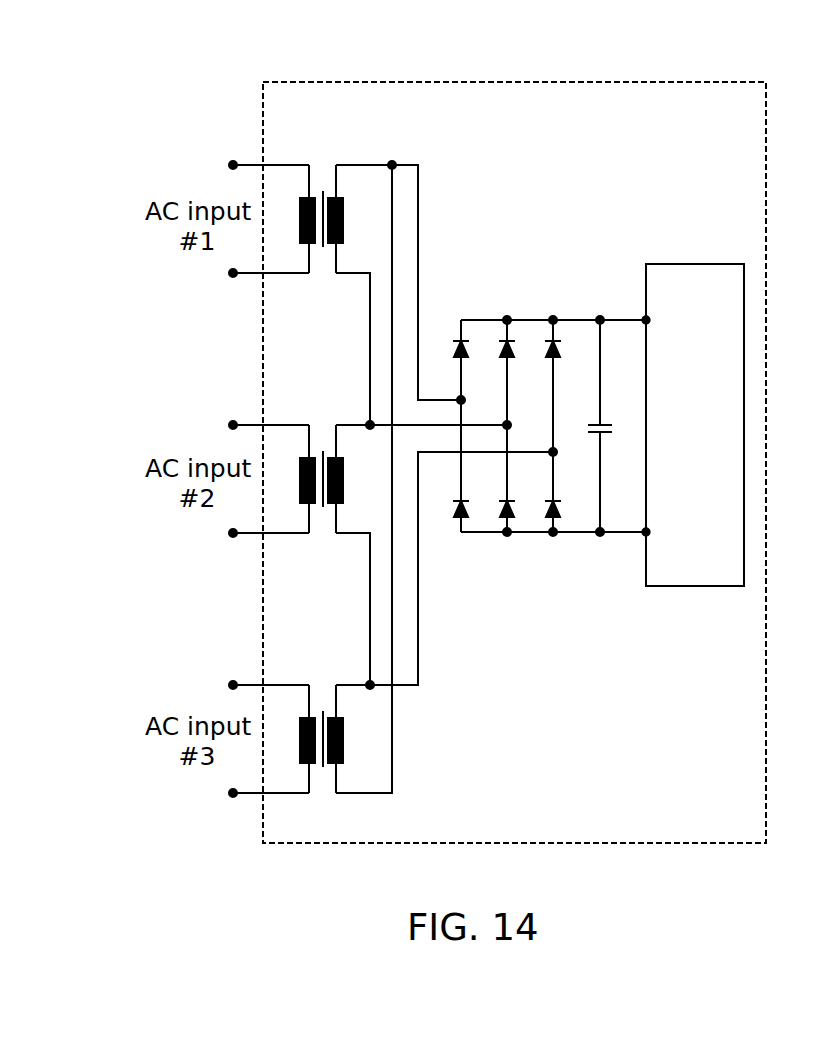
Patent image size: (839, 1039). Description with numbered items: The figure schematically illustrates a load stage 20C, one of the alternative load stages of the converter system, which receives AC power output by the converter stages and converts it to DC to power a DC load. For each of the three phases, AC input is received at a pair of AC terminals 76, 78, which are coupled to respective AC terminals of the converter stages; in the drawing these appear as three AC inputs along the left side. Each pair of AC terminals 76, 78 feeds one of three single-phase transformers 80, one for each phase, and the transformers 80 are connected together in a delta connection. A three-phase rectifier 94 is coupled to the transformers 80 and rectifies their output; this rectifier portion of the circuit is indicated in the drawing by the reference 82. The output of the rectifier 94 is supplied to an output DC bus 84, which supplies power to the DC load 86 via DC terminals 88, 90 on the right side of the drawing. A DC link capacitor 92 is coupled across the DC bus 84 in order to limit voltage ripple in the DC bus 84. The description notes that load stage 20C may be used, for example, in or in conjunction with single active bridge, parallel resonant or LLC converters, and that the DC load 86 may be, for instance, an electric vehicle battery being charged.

The load stage 20C is at (660, 82).
The AC terminal 76 is at (233, 165).
The AC terminal 78 is at (233, 273).
The single-phase transformer 80 is at (317, 160).
The rectifier circuit 82 is at (528, 702).
The output DC bus 84 is at (603, 270).
The DC load 86 is at (695, 425).
The DC terminal 88 is at (648, 320).
The DC terminal 90 is at (648, 532).
The DC link capacitor 92 is at (600, 424).
The three-phase rectifier 94 is at (517, 303).